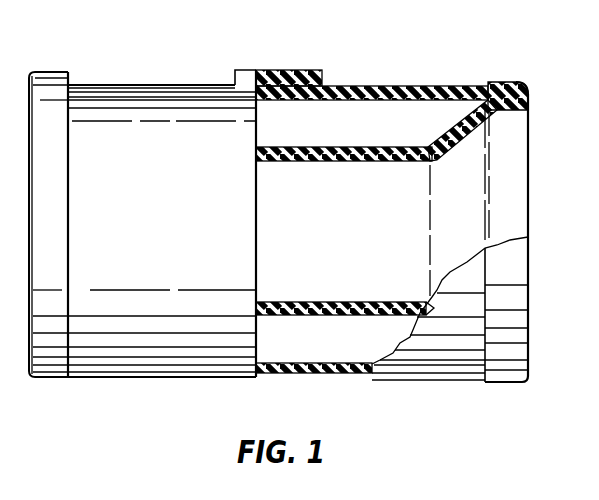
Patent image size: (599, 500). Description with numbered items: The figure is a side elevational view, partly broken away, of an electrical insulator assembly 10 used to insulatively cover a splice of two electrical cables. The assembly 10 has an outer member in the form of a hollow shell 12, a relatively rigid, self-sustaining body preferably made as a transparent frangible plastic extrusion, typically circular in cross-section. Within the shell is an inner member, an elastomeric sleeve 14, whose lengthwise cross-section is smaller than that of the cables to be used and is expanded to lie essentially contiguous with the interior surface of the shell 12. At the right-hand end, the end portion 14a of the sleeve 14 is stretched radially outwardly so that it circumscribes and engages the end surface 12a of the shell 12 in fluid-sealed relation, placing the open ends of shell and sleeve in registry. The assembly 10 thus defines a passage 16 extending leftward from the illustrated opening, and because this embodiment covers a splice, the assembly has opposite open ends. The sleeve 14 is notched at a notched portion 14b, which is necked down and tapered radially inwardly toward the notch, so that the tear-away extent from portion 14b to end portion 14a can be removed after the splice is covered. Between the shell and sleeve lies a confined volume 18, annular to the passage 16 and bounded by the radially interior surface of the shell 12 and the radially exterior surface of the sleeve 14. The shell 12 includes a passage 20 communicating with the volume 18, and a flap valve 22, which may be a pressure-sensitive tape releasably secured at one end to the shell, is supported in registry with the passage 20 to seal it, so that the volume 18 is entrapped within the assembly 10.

The electrical insulator assembly 10 is at (373, 69).
The hollow shell 12 is at (426, 86).
The end surface of shell 12a is at (508, 112).
The elastomeric sleeve 14 is at (328, 162).
The end portion of sleeve 14a is at (500, 80).
The notched portion of sleeve 14b is at (437, 148).
The passage 16 is at (358, 251).
The confined volume 18 is at (331, 134).
The passage in shell 20 is at (279, 93).
The flap valve 22 is at (317, 72).